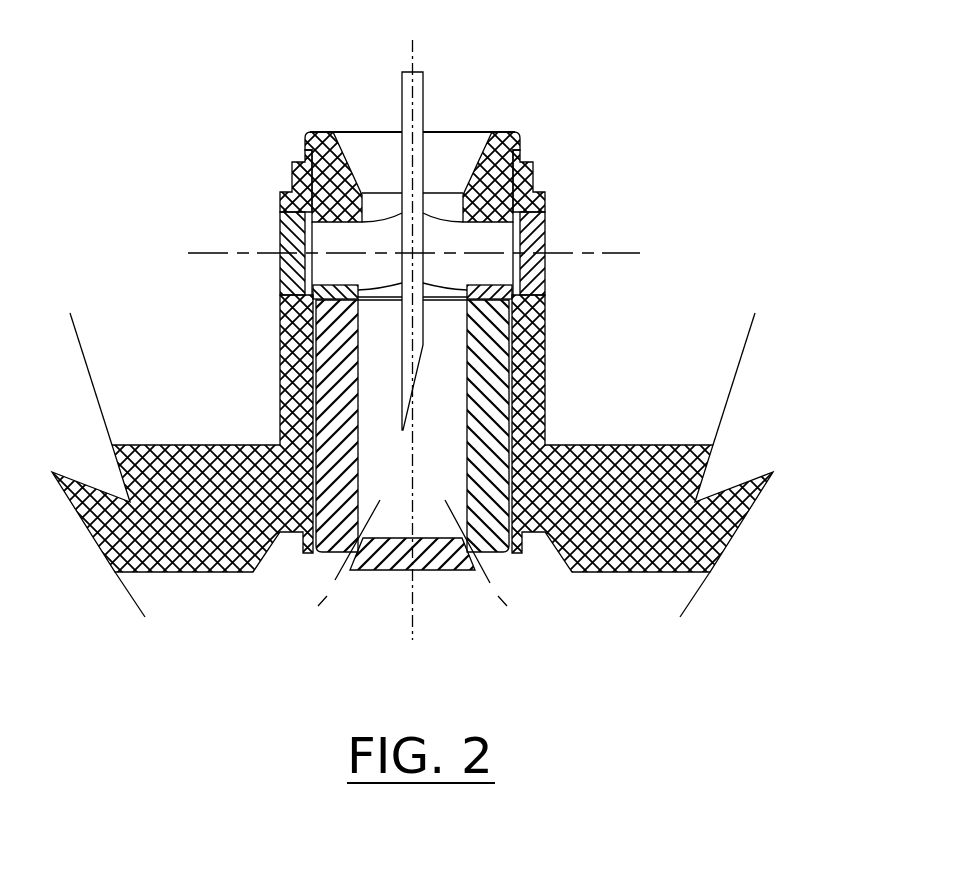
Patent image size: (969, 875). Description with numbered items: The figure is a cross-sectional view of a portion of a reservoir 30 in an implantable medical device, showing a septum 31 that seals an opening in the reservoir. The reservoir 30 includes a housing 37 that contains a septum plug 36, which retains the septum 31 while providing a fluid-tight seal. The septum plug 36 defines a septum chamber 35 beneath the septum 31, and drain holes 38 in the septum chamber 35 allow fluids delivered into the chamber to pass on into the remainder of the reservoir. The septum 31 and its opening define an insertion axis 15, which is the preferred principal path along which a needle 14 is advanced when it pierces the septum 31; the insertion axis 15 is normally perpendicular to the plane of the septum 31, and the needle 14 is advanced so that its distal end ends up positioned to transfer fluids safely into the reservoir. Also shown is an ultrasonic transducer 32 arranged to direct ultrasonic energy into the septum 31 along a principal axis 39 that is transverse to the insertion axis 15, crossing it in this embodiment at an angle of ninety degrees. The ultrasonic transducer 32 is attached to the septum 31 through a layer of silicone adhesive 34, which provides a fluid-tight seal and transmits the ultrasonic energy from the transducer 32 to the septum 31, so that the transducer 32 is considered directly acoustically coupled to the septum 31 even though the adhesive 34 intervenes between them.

The needle 14 is at (433, 135).
The insertion axis 15 is at (412, 70).
The reservoir 30 is at (750, 187).
The septum 31 is at (485, 250).
The ultrasonic transducer 32 is at (285, 263).
The silicone adhesive 34 is at (303, 160).
The septum chamber 35 is at (443, 383).
The septum plug 36 is at (490, 406).
The housing 37 is at (257, 573).
The drain holes 38 is at (490, 585).
The principal axis 39 is at (567, 253).